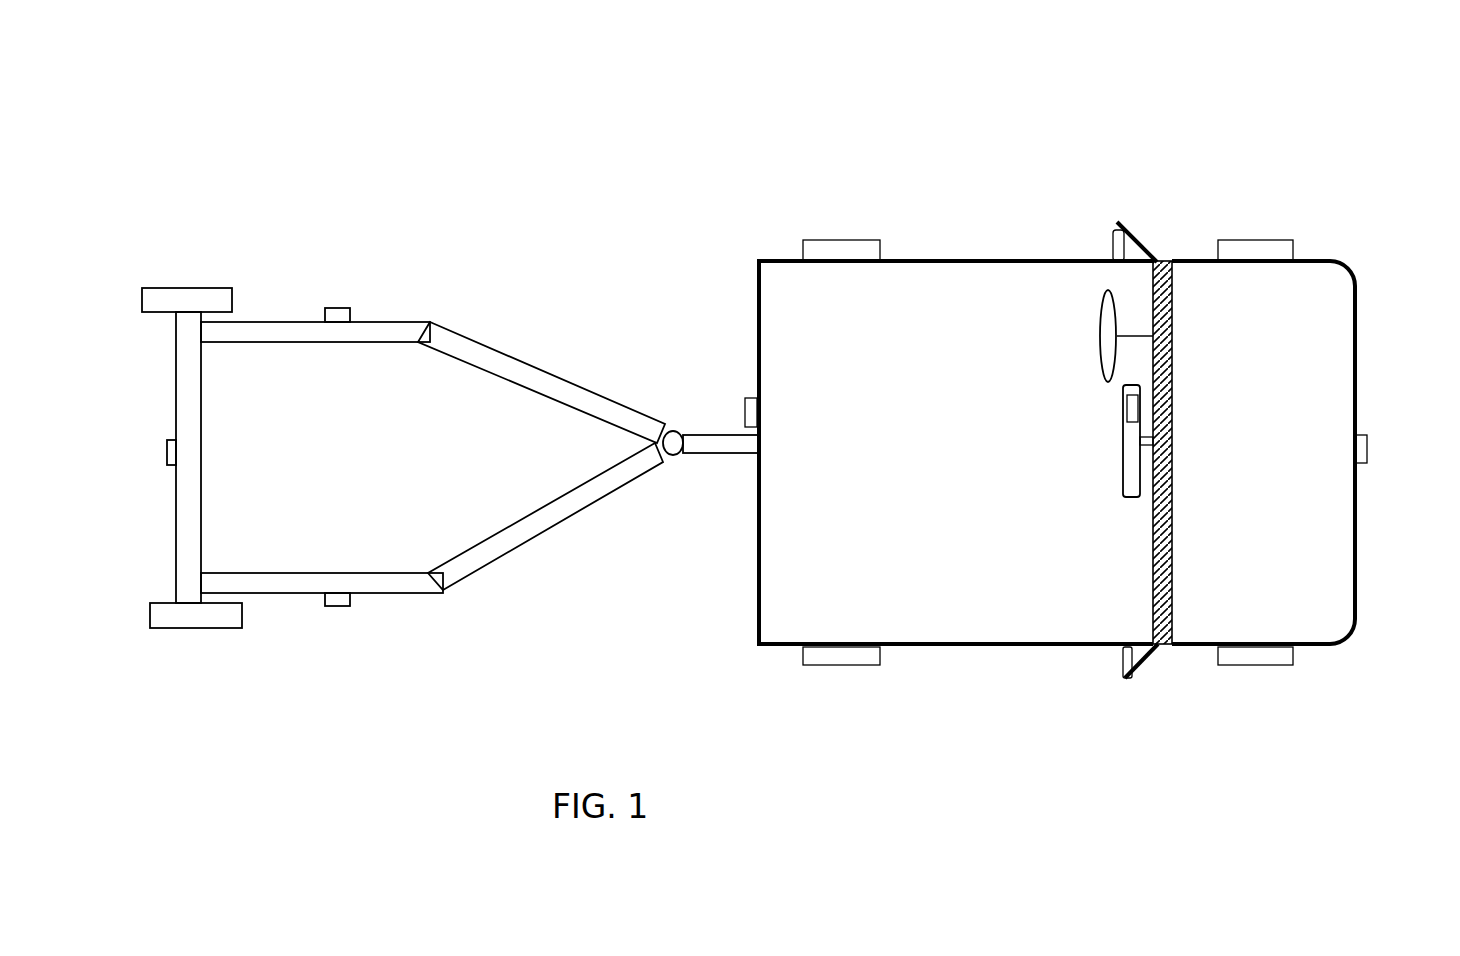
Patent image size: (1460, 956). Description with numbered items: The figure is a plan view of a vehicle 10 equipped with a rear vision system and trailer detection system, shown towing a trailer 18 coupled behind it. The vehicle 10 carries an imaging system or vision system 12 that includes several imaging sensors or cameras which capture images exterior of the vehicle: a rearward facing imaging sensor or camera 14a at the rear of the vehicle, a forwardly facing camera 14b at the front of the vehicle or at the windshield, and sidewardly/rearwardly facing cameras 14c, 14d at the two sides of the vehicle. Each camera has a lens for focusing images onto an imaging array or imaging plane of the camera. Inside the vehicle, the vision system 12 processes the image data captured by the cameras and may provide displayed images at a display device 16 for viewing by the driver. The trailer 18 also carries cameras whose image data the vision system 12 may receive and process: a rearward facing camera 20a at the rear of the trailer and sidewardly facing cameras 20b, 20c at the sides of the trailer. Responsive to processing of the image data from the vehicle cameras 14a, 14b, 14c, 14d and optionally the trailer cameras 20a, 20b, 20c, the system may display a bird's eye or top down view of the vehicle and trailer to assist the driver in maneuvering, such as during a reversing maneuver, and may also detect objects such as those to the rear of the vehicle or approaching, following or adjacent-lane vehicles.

The vehicle 10 is at (983, 137).
The vision system 12 is at (700, 333).
The rearward facing camera 14a is at (742, 415).
The forwardly facing camera 14b is at (1368, 452).
The sidewardly/rearwardly facing camera 14c is at (1115, 237).
The sidewardly/rearwardly facing camera 14d is at (1123, 660).
The display device 16 is at (1128, 407).
The trailer 18 is at (415, 213).
The rearward facing camera 20a is at (167, 458).
The sidewardly facing camera 20b is at (336, 306).
The sidewardly facing camera 20c is at (337, 599).